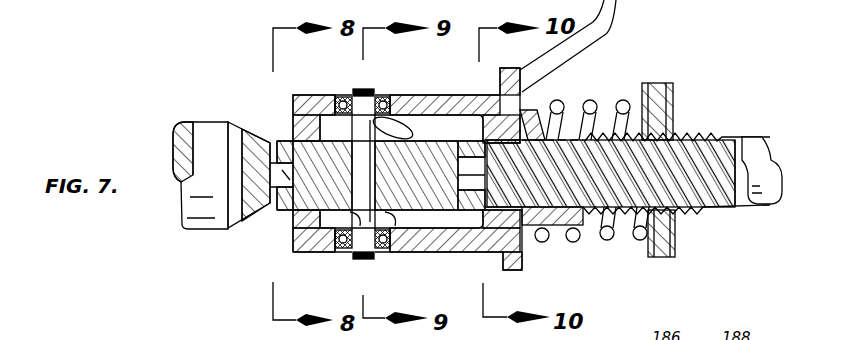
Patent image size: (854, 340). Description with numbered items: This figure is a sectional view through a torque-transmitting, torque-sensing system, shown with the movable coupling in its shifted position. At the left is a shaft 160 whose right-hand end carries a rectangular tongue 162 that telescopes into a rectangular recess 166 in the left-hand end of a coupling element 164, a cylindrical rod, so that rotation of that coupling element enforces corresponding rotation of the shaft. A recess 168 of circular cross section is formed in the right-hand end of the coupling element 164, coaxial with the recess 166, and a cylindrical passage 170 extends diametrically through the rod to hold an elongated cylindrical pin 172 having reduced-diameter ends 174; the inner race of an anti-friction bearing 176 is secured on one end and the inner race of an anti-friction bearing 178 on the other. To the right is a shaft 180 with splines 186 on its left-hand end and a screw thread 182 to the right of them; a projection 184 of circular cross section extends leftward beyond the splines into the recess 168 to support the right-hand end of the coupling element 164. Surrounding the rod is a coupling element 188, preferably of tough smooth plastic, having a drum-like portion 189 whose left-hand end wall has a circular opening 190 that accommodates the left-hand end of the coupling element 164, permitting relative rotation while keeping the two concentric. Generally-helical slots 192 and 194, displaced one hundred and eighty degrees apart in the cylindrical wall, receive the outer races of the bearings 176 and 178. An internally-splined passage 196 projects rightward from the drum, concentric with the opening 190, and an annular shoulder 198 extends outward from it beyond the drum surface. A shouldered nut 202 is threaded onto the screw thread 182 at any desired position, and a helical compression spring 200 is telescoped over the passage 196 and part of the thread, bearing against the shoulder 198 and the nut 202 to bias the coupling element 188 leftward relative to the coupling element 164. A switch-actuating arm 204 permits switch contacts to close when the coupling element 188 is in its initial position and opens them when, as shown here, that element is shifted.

The shaft 160 is at (195, 122).
The rectangular tongue 162 is at (287, 190).
The coupling element 164 is at (430, 214).
The rectangular recess 166 is at (292, 145).
The recess 168 is at (447, 140).
The cylindrical passage 170 is at (327, 253).
The elongated cylindrical pin 172 is at (389, 232).
The reduced-diameter ends 174 is at (360, 90).
The anti-friction bearing 176 is at (378, 94).
The anti-friction bearing 178 is at (380, 258).
The shaft 180 is at (753, 137).
The screw thread 182 is at (700, 133).
The projection 184 is at (467, 192).
The splines 186 is at (563, 123).
The coupling element 188 is at (292, 251).
The drum-like portion 189 is at (456, 97).
The circular opening 190 is at (292, 108).
The generally-helical slot 192 is at (328, 96).
The generally-helical slot 194 is at (406, 257).
The internally-splined passage 196 is at (527, 243).
The annular shoulder 198 is at (511, 266).
The helical compression spring 200 is at (599, 243).
The shouldered nut 202 is at (667, 83).
The switch-actuating arm 204 is at (616, 10).